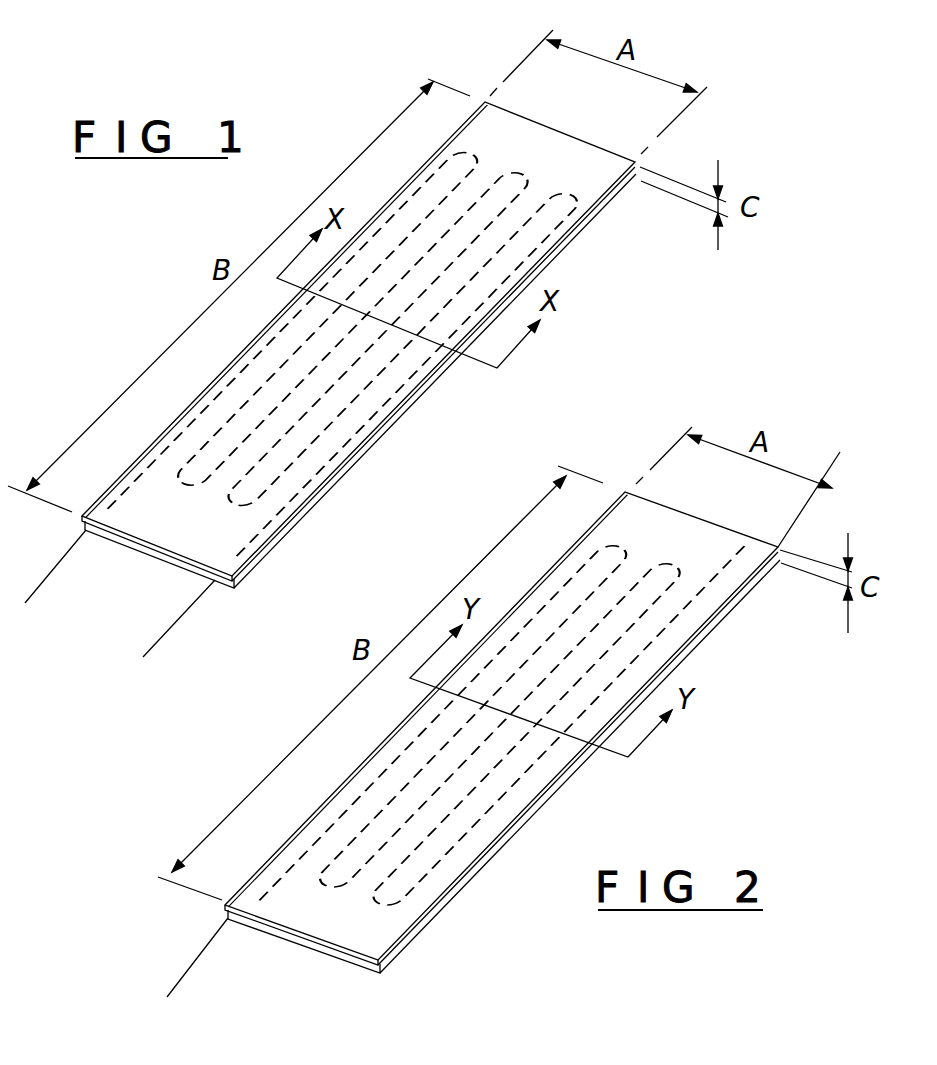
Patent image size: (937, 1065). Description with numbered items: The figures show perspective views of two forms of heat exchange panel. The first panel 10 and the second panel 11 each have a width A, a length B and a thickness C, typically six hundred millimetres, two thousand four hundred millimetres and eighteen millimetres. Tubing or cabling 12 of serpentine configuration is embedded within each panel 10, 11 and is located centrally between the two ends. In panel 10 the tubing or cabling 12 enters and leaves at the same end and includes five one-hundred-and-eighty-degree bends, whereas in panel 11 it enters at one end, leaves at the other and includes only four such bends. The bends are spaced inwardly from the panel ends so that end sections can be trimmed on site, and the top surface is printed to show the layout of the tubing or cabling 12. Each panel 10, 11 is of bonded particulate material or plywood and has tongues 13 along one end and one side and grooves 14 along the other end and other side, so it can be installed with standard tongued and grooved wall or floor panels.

In FIG. 1, the panel 10 is at (540, 152).
In FIG. 2, the panel 11 is at (673, 543).
In FIG. 1, the tubing or cabling 12 is at (157, 640).
In FIG. 2, the tubing or cabling 12 is at (177, 990).
In FIG. 1, the tongues 13 is at (527, 118).
In FIG. 2, the tongues 13 is at (677, 507).
In FIG. 1, the grooves 14 is at (278, 538).
In FIG. 2, the grooves 14 is at (407, 937).